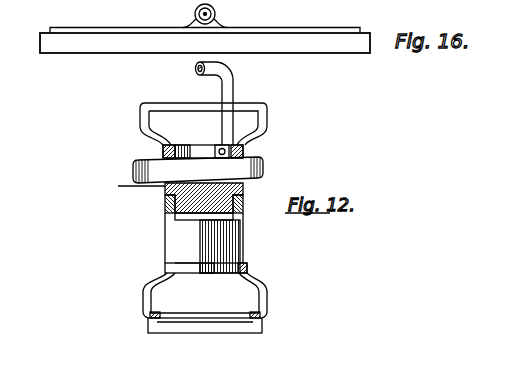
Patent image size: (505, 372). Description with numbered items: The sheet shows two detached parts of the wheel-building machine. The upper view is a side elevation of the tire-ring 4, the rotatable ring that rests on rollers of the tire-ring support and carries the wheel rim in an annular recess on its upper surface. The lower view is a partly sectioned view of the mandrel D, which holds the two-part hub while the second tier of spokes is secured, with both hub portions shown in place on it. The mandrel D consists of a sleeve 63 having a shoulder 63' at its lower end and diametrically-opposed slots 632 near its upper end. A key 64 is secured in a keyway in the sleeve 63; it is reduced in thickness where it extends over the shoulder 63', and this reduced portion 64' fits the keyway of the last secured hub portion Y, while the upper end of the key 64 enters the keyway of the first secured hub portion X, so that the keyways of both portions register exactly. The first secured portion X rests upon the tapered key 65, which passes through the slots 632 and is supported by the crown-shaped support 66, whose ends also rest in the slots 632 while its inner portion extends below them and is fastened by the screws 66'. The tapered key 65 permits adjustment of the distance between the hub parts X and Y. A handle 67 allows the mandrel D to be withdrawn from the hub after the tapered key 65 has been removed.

In FIG. 16, the tire-ring 4 is at (142, 27).
In FIG. 12, the handle 67 is at (224, 86).
In FIG. 12, the first secured portion of the hub X is at (217, 124).
In FIG. 12, the slots 632 is at (229, 167).
In FIG. 12, the tapered key 65 is at (198, 170).
In FIG. 12, the screws 66' is at (198, 201).
In FIG. 12, the crown-shaped support 66 is at (185, 224).
In FIG. 12, the sleeve 63 is at (218, 243).
In FIG. 12, the key 64 is at (204, 246).
In FIG. 12, the last secured portion of the hub Y is at (258, 286).
In FIG. 12, the shoulder 63' is at (220, 283).
In FIG. 12, the reduced portion of the key 64' is at (184, 282).
In FIG. 12, the mandrel D is at (124, 185).